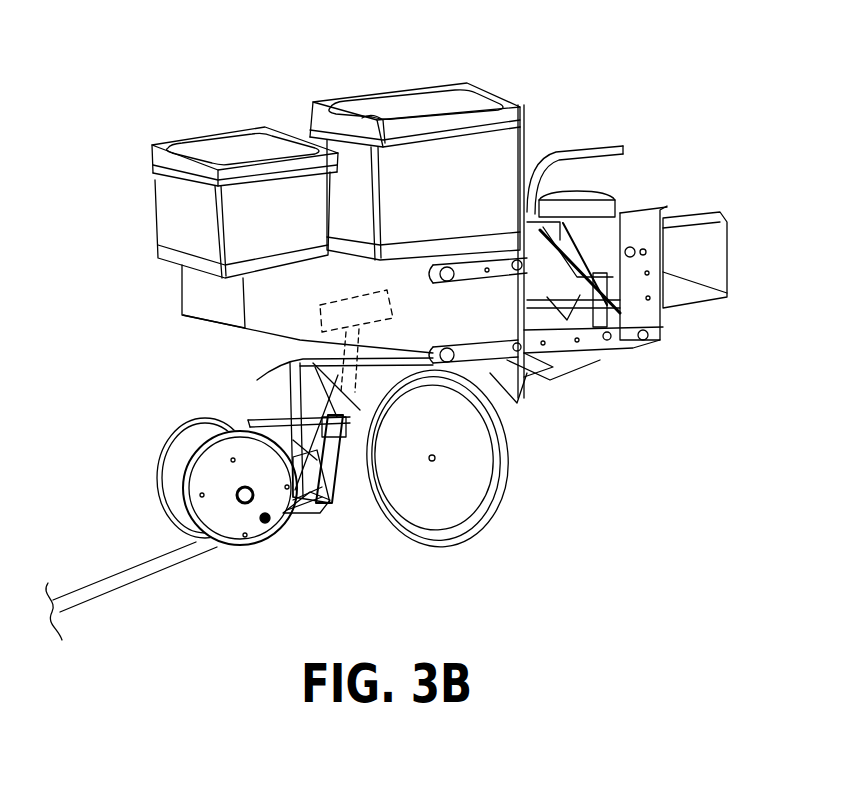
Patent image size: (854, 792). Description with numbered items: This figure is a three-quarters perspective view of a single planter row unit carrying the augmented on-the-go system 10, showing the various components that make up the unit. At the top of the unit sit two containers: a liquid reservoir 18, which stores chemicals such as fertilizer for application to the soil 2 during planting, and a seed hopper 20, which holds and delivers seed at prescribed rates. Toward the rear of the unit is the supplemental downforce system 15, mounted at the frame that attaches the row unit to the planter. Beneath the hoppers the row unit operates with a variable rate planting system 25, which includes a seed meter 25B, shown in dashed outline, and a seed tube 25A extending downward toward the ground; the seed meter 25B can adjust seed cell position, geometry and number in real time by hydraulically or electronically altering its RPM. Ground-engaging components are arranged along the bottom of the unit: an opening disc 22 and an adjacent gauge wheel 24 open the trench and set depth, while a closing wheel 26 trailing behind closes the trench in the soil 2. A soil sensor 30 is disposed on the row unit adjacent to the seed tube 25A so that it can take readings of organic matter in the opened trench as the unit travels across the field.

The augmented on-the-go system 10 is at (603, 84).
The liquid reservoir 18 is at (213, 132).
The seed hopper 20 is at (422, 150).
The supplemental downforce system 15 is at (597, 203).
The variable rate planting system 25 is at (320, 358).
The seed tube 25A is at (323, 510).
The seed meter 25B is at (320, 318).
The soil sensor 30 is at (340, 493).
The opening disc 22 is at (503, 477).
The gauge wheel 24 is at (443, 533).
The closing wheel 26 is at (243, 543).
The soil 2 is at (127, 587).